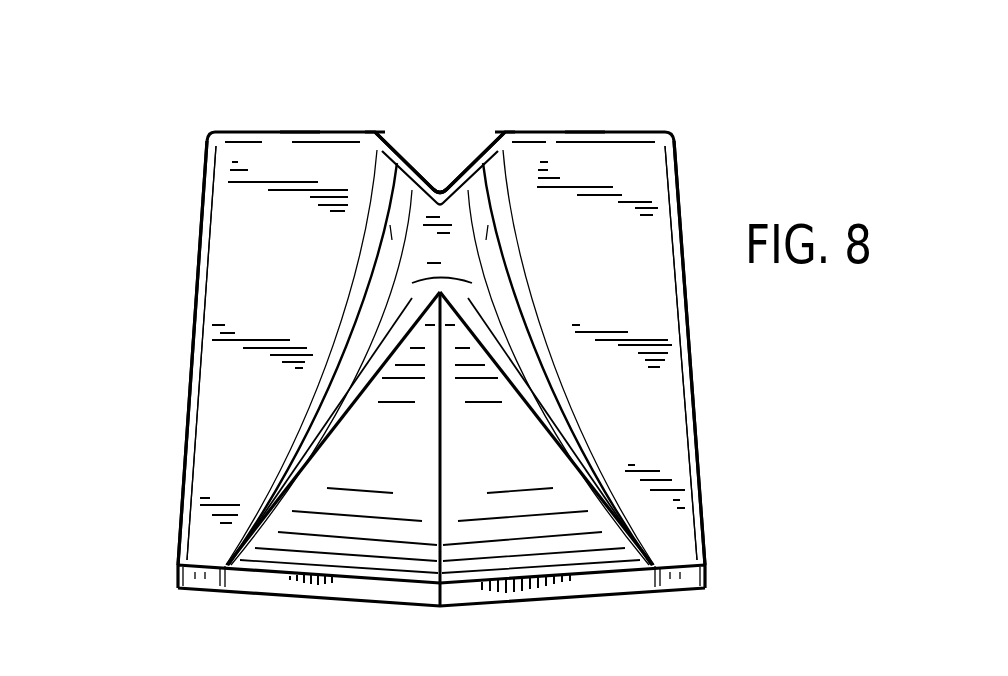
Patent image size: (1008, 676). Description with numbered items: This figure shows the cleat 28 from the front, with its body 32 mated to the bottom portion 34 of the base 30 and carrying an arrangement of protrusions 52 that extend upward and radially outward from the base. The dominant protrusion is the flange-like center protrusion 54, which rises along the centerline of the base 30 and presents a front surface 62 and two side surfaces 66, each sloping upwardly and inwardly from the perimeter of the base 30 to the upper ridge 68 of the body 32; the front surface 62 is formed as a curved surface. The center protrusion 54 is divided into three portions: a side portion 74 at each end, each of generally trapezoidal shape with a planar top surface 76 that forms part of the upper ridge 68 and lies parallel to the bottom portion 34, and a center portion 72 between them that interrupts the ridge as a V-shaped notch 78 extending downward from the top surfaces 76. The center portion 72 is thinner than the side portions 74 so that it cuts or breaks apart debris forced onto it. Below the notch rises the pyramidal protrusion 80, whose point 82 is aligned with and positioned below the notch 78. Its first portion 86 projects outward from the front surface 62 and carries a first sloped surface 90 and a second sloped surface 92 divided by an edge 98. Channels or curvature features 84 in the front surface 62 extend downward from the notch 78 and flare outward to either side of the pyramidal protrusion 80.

The cleat 28 is at (766, 114).
The base 30 is at (248, 604).
The body 32 is at (162, 192).
The bottom portion 34 is at (690, 579).
The arrangement of protrusions 52 is at (566, 501).
The center protrusion 54 is at (727, 367).
The front surface 62 is at (286, 314).
The side surfaces 66 is at (192, 352).
The upper ridge 68 is at (654, 86).
The center portion 72 is at (418, 118).
The side portions 74 is at (262, 116).
The top surface 76 is at (299, 131).
The V-shaped notch 78 is at (449, 170).
The pyramidal protrusion 80 is at (345, 422).
The point 82 is at (441, 288).
The curvature features 84 is at (407, 313).
The first portion 86 is at (396, 550).
The first sloped surface 90 is at (391, 474).
The second sloped surface 92 is at (515, 474).
The edge 98 is at (442, 413).